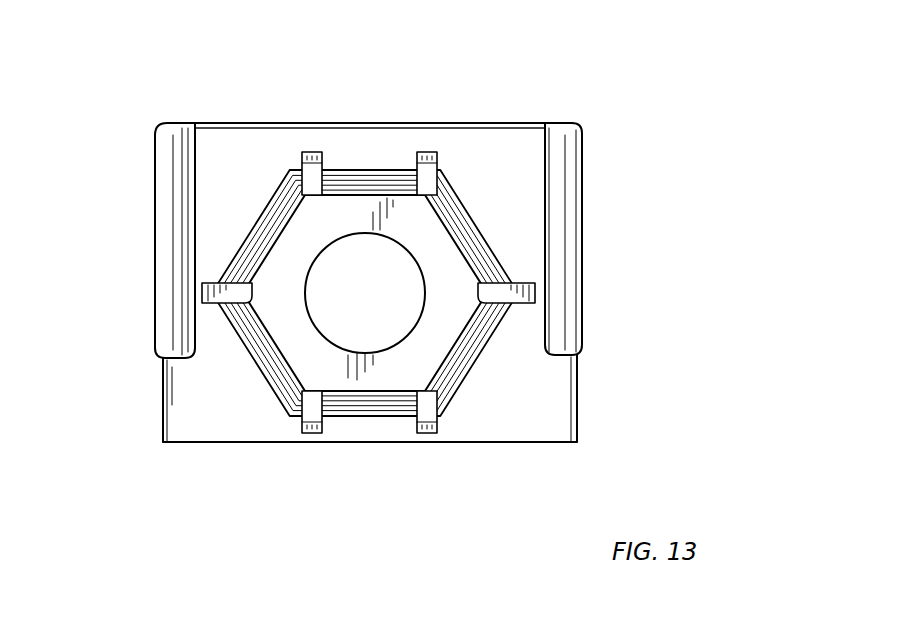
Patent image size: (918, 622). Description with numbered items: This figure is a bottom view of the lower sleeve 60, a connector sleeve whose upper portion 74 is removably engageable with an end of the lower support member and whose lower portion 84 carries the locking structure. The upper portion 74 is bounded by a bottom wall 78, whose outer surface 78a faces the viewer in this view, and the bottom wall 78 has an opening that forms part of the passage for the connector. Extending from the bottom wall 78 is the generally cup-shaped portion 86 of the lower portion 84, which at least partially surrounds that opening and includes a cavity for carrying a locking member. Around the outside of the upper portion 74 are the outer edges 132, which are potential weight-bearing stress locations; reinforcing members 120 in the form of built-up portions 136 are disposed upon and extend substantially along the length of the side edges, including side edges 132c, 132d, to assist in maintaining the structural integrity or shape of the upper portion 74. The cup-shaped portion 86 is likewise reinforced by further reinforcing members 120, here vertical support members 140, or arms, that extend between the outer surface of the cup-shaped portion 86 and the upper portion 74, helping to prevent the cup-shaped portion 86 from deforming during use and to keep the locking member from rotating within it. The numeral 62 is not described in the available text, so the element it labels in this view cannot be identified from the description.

The lower sleeve 60 is at (367, 268).
The base member 62 is at (210, 423).
The upper portion 74 is at (470, 442).
The bottom wall 78 is at (498, 130).
The outer surface of bottom wall 78a is at (370, 156).
The lower portion 84 is at (372, 425).
The cup-shaped portion 86 is at (447, 322).
The reinforcing members 120 is at (423, 128).
The outer edges 132 is at (347, 123).
The side edge 132c is at (162, 423).
The side edge 132d is at (578, 375).
The built-up portions 136 is at (156, 183).
The vertical support members 140 is at (300, 153).